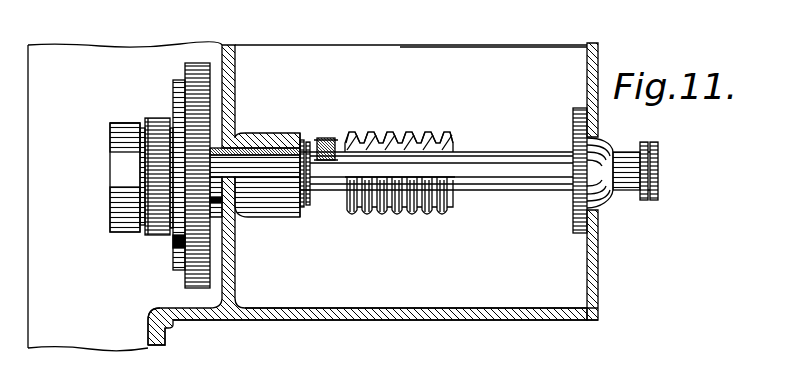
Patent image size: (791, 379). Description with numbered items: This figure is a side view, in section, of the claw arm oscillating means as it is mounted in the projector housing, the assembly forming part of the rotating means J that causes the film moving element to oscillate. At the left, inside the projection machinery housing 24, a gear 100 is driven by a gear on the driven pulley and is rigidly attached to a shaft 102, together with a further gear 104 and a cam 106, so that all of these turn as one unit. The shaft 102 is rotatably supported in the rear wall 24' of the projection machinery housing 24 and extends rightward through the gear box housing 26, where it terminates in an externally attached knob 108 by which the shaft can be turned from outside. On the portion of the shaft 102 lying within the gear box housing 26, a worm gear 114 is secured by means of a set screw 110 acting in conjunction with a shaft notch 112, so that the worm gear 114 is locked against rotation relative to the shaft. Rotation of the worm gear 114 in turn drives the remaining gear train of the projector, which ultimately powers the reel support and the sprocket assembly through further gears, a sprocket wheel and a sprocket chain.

The projection machinery housing 24 is at (150, 343).
The rear wall 24' is at (367, 179).
The gear box housing 26 is at (485, 321).
The gear 100 is at (195, 63).
The shaft 102 is at (502, 162).
The gear 104 is at (157, 118).
The cam 106 is at (127, 232).
The knob 108 is at (658, 180).
The set screw 110 is at (322, 140).
The shaft notch 112 is at (310, 160).
The worm gear 114 is at (422, 145).
The rotating means J is at (122, 118).